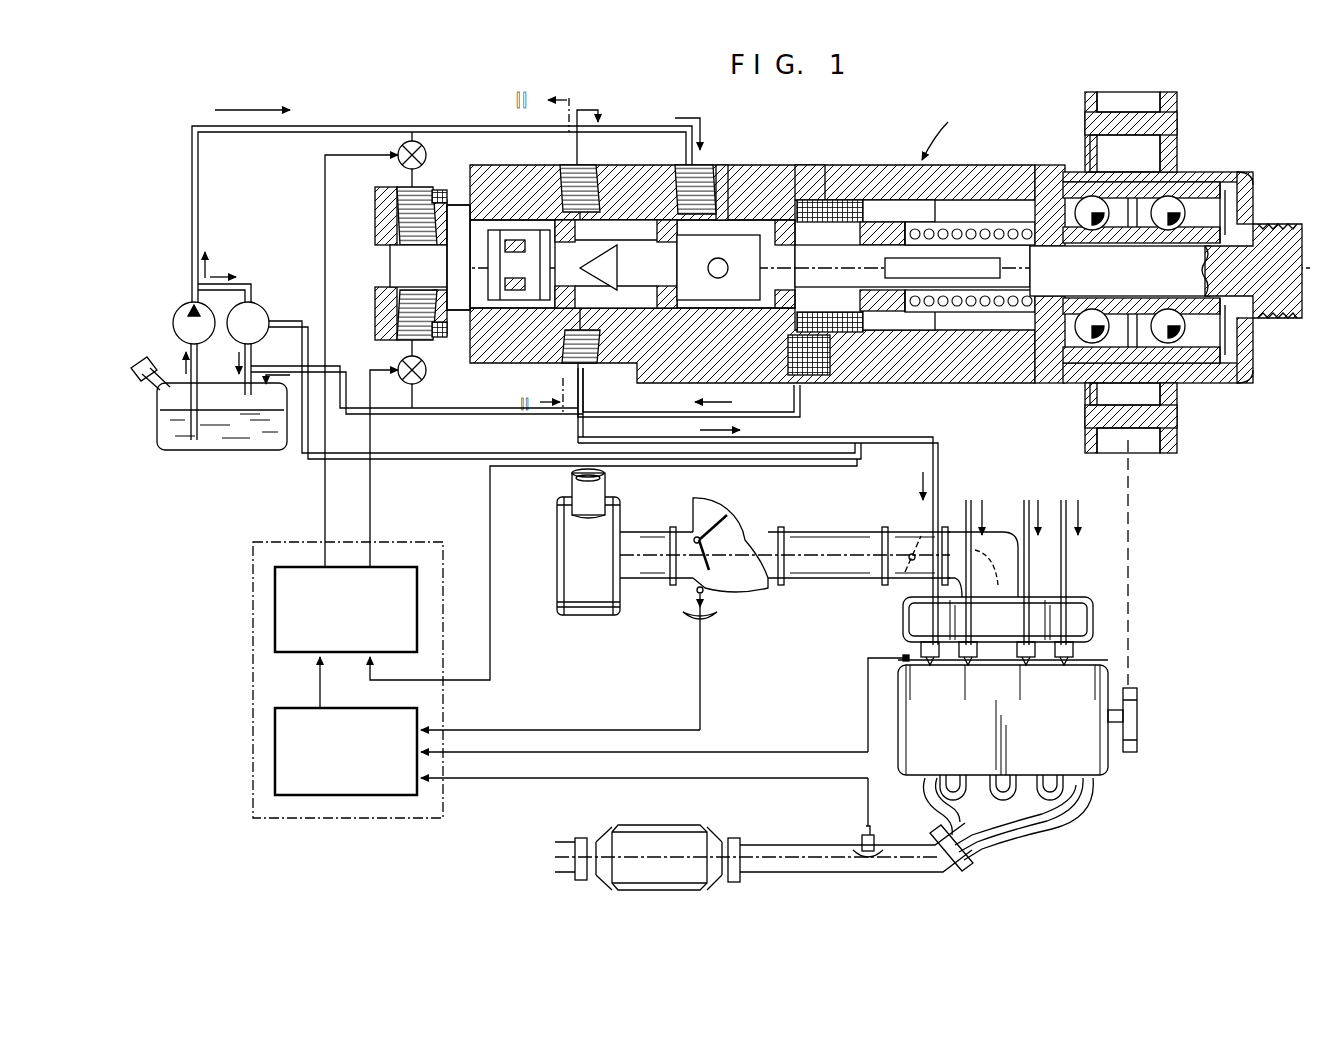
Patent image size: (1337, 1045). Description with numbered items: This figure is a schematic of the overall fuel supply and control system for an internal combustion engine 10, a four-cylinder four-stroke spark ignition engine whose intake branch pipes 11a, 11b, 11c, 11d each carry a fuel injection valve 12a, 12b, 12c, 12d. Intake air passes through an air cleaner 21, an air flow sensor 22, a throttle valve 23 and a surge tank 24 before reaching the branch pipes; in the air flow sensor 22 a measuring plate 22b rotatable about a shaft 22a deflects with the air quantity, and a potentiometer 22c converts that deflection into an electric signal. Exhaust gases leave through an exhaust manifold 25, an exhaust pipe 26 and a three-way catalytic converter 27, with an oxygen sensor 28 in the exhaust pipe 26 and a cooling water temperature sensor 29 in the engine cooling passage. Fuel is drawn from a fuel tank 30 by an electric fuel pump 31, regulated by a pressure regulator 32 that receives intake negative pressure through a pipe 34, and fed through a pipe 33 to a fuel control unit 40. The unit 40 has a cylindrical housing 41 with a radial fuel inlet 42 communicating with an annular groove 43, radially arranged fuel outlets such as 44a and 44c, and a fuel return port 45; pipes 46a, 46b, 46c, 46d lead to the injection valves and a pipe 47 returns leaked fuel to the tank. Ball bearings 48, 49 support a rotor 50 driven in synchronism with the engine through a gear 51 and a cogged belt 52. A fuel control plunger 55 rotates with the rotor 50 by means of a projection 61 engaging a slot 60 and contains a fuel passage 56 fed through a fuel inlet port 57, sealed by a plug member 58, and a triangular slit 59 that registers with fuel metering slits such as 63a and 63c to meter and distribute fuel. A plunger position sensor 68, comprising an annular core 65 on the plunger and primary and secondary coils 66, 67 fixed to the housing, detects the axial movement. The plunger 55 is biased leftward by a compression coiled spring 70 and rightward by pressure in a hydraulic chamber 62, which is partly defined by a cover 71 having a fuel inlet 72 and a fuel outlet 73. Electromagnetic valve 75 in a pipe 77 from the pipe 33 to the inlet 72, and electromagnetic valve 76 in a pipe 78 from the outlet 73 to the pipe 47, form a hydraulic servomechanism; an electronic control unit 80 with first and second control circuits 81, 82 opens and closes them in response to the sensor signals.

The internal combustion engine 10 is at (1108, 775).
The intake branch pipe 11a is at (915, 650).
The intake branch pipe 11b is at (962, 665).
The intake branch pipe 11c is at (1062, 665).
The intake branch pipe 11d is at (1080, 652).
The fuel injection valve 12a is at (932, 668).
The fuel injection valve 12b is at (978, 668).
The fuel injection valve 12c is at (1033, 668).
The fuel injection valve 12d is at (1077, 668).
The air cleaner 21 is at (557, 565).
The air flow sensor 22 is at (748, 532).
The shaft 22a is at (692, 530).
The measuring plate 22b is at (729, 545).
The potentiometer 22c is at (695, 603).
The throttle valve 23 is at (903, 535).
The surge tank 24 is at (1072, 600).
The exhaust manifold 25 is at (1050, 830).
The exhaust pipe 26 is at (775, 845).
The three-way catalytic converter 27 is at (645, 825).
The oxygen sensor 28 is at (872, 828).
The cooling water temperature sensor 29 is at (868, 660).
The fuel tank 30 is at (250, 450).
The fuel pump 31 is at (173, 320).
The pressure regulator 32 is at (262, 308).
The pipe 33 is at (245, 132).
The pipe 34 is at (436, 452).
The fuel control unit 40 is at (962, 118).
The cylindrical housing 41 is at (836, 165).
The fuel inlet 42 is at (712, 165).
The annular groove 43 is at (735, 180).
The fuel outlet 44a is at (604, 403).
The fuel outlet 44c is at (575, 185).
The fuel return port 45 is at (797, 396).
The pipe 46a is at (885, 438).
The pipe 46b is at (966, 510).
The pipe 46c is at (580, 110).
The pipe 46d is at (1063, 510).
The pipe 47 is at (423, 414).
The ball bearing 48 is at (1072, 357).
The ball bearing 49 is at (1172, 345).
The rotor 50 is at (1040, 250).
The gear 51 is at (1172, 120).
The cogged belt 52 is at (1130, 517).
The fuel control plunger 55 is at (648, 220).
The fuel passage 56 is at (662, 385).
The fuel inlet port 57 is at (728, 262).
The plug member 58 is at (497, 232).
The regular triangular slit 59 is at (618, 262).
The slot 60 is at (958, 282).
The projection 61 is at (1000, 245).
The hydraulic chamber 62 is at (460, 320).
The fuel metering slit 63a is at (575, 330).
The fuel metering slit 63c is at (665, 200).
The annular core 65 is at (900, 222).
The primary coil 66 is at (840, 200).
The secondary coil 67 is at (808, 170).
The plunger position sensor 68 is at (820, 377).
The compression coiled spring 70 is at (950, 258).
The cover 71 is at (375, 215).
The fuel inlet 72 is at (425, 245).
The fuel outlet 73 is at (397, 338).
The electromagnetic valve 75 is at (396, 160).
The electromagnetic valve 76 is at (422, 378).
The pipe 77 is at (412, 140).
The solenoid valve 78 is at (398, 362).
The electronic control unit 80 is at (253, 628).
The first control circuit 81 is at (275, 750).
The second control circuit 82 is at (417, 622).